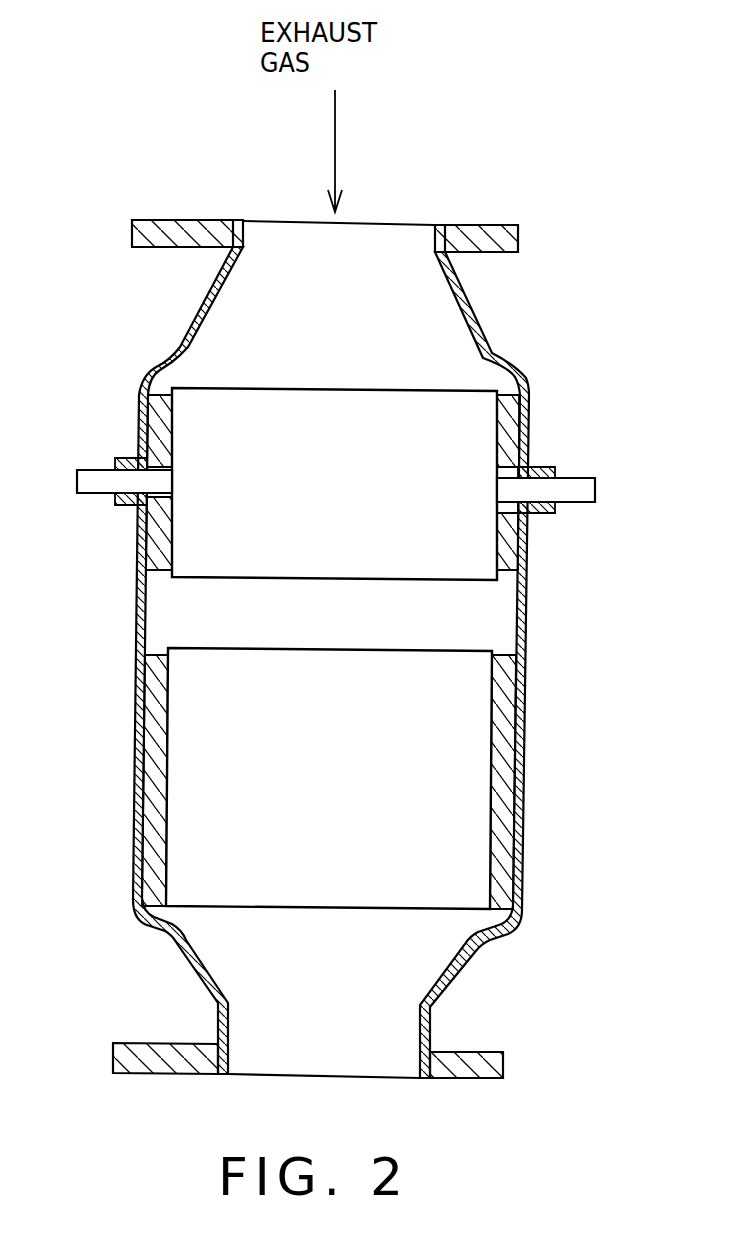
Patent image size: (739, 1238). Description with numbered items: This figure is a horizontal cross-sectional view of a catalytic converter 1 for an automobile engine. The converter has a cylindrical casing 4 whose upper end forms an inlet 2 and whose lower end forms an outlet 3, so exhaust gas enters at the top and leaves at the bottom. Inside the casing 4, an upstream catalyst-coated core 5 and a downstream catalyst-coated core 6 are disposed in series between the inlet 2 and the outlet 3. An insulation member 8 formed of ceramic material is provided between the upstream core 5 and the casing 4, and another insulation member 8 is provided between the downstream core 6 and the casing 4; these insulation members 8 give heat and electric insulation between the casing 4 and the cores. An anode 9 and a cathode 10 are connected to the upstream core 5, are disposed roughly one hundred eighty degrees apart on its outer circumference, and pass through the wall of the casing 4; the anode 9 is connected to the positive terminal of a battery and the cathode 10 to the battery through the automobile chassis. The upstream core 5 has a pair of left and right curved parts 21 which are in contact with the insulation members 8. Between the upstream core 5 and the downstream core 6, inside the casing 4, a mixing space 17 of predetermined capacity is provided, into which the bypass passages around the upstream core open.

The catalytic converter 1 is at (343, 646).
The inlet 2 is at (402, 250).
The outlet 3 is at (392, 1045).
The casing 4 is at (180, 953).
The upstream catalyst-coated core 5 is at (462, 410).
The downstream catalyst-coated core 6 is at (462, 715).
The insulation member 8 is at (163, 417).
The anode 9 is at (567, 497).
The cathode 10 is at (93, 495).
The mixing space 17 is at (175, 620).
The curved part 21 is at (528, 438).